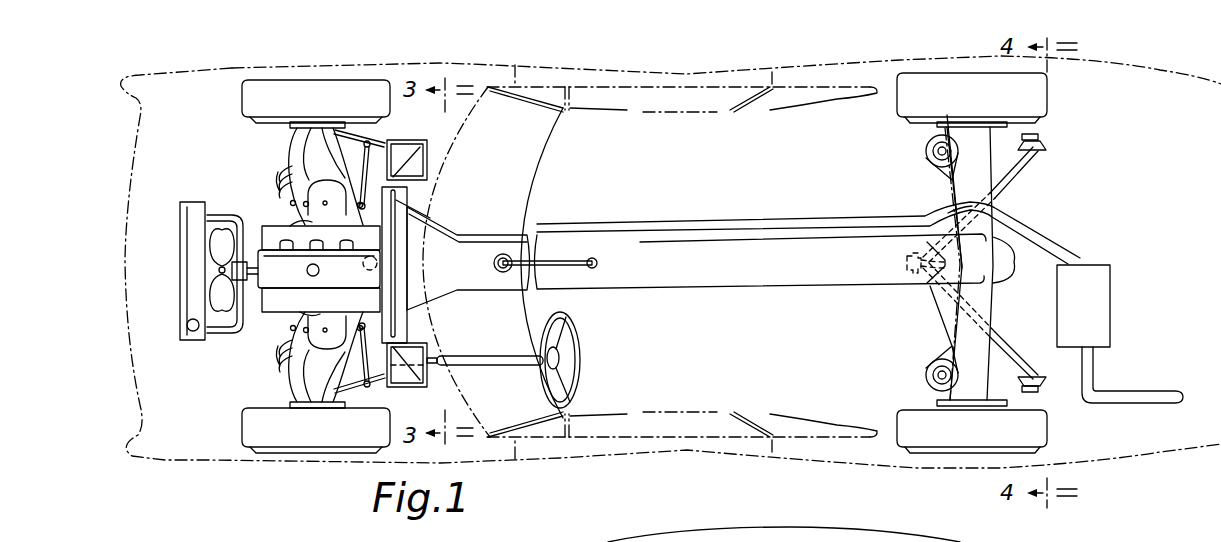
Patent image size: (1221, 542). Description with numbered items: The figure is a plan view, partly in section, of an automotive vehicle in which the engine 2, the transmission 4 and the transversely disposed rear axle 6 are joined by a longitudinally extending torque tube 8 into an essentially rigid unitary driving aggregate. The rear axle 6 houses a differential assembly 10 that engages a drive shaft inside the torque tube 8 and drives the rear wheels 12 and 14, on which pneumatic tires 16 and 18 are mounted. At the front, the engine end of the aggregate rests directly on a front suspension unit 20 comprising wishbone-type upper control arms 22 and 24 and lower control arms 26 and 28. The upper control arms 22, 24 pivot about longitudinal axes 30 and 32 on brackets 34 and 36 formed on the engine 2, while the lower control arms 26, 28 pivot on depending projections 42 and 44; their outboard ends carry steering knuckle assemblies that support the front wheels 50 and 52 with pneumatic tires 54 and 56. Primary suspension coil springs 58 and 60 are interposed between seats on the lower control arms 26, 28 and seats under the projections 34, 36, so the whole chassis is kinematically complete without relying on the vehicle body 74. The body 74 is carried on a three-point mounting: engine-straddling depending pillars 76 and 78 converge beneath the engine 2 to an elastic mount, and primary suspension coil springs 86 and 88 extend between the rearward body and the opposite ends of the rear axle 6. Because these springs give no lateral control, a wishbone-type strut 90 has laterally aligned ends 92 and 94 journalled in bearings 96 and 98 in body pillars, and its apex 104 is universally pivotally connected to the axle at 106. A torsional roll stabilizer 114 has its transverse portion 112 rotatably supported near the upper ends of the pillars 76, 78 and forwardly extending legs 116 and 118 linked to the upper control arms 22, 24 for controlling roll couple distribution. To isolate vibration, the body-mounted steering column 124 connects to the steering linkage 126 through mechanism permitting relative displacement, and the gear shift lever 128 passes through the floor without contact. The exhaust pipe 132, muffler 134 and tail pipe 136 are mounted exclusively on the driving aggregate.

The vehicle engine 2 is at (306, 288).
The transmission 4 is at (443, 290).
The rear axle 6 is at (984, 260).
The torque tube 8 is at (684, 265).
The differential assembly 10 is at (1014, 257).
The rear wheel 12 is at (987, 79).
The rear wheel 14 is at (1000, 453).
The pneumatic tire 16 is at (913, 85).
The pneumatic tire 18 is at (957, 437).
The front suspension unit 20 is at (311, 155).
The upper control arm 22 is at (327, 130).
The upper control arm 24 is at (317, 410).
The lower control arm 26 is at (290, 145).
The lower control arm 28 is at (287, 390).
The longitudinally-extending axis 30 is at (327, 184).
The longitudinally-extending axis 32 is at (288, 290).
The bracket 34 is at (307, 226).
The bracket 36 is at (328, 270).
The depending projection 42 is at (253, 227).
The depending projection 44 is at (247, 312).
The front wheel 50 is at (275, 80).
The front wheel 52 is at (278, 448).
The pneumatic tire 54 is at (238, 105).
The pneumatic tire 56 is at (270, 437).
The primary suspension coil spring 58 is at (277, 177).
The primary suspension coil spring 60 is at (277, 353).
The vehicle body 74 is at (203, 460).
The depending pillar 76 is at (430, 150).
The depending pillar 78 is at (430, 375).
The primary suspension coil spring 86 is at (925, 150).
The primary suspension coil spring 88 is at (925, 377).
The wishbone-type strut 90 is at (997, 198).
The strut end 92 is at (1033, 147).
The strut end 94 is at (1040, 377).
The bearing 96 is at (1047, 138).
The bearing 98 is at (1040, 390).
The apex 104 is at (907, 263).
The universal pivotal connection 106 is at (905, 288).
The transversely extending portion 112 is at (409, 224).
The torsional roll stabilizer 114 is at (398, 328).
The forwardly extending leg 116 is at (380, 138).
The forwardly extending leg 118 is at (380, 390).
The steering column 124 is at (517, 357).
The steering linkage 126 is at (304, 352).
The gear shift lever 128 is at (570, 267).
The exhaust pipe 132 is at (633, 225).
The muffler 134 is at (1100, 300).
The tail pipe 136 is at (1097, 373).